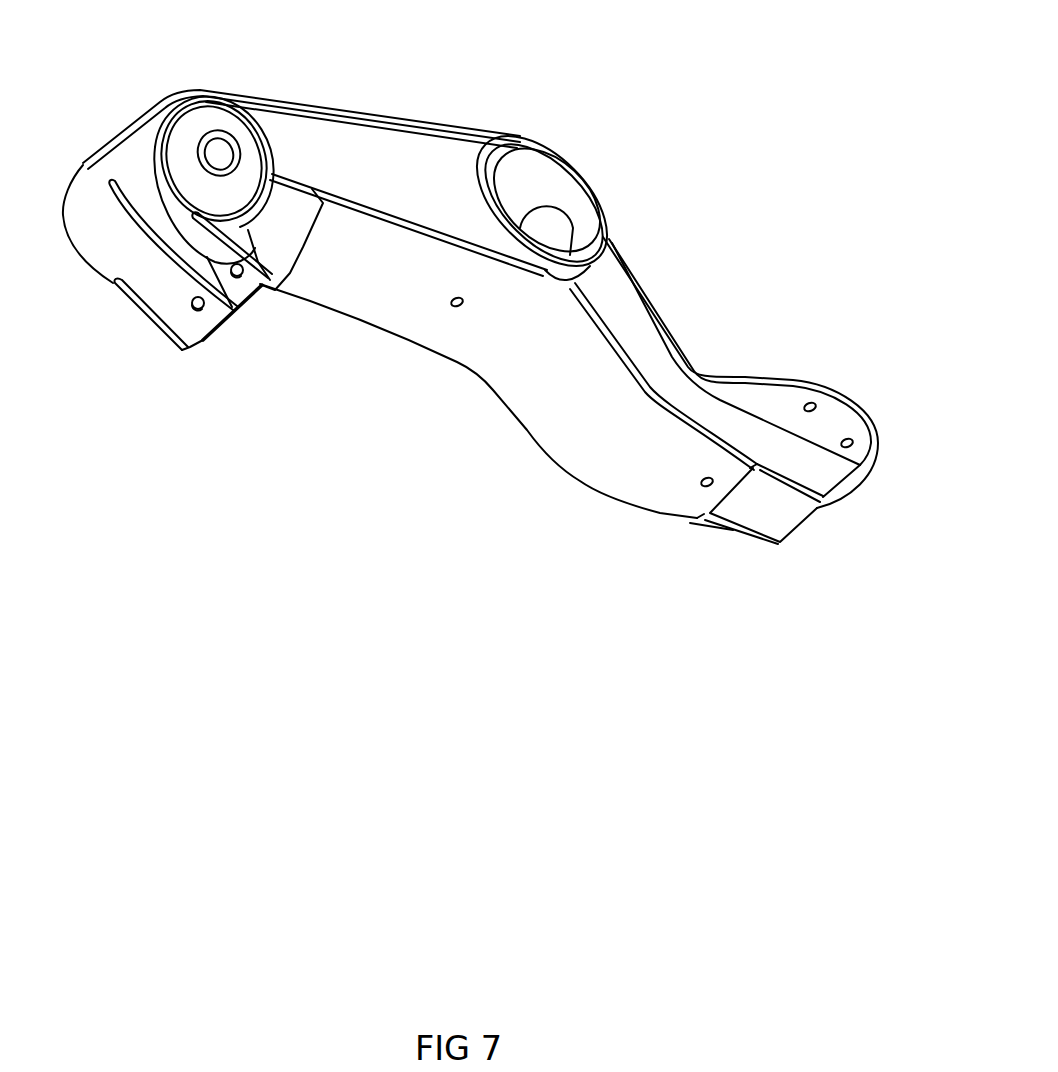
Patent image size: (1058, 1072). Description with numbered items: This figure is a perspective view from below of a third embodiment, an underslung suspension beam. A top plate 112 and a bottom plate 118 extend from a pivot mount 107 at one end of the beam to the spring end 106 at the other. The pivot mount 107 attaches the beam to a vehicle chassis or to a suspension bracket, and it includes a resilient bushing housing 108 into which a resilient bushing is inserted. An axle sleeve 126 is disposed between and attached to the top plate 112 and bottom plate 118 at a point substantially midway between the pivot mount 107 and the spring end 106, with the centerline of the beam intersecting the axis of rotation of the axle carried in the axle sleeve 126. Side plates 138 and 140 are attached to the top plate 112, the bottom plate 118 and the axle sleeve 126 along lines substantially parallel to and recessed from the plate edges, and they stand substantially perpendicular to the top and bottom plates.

The second end 106 is at (885, 501).
The pivot mount 107 is at (223, 135).
The resilient bushing housing 108 is at (167, 96).
The top plate 112 is at (399, 117).
The bottom plate 118 is at (548, 402).
The axle sleeve 126 is at (583, 172).
The side plate 138 is at (319, 146).
The side plate 140 is at (628, 315).